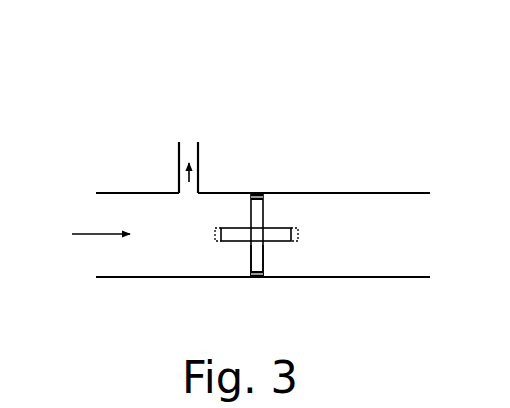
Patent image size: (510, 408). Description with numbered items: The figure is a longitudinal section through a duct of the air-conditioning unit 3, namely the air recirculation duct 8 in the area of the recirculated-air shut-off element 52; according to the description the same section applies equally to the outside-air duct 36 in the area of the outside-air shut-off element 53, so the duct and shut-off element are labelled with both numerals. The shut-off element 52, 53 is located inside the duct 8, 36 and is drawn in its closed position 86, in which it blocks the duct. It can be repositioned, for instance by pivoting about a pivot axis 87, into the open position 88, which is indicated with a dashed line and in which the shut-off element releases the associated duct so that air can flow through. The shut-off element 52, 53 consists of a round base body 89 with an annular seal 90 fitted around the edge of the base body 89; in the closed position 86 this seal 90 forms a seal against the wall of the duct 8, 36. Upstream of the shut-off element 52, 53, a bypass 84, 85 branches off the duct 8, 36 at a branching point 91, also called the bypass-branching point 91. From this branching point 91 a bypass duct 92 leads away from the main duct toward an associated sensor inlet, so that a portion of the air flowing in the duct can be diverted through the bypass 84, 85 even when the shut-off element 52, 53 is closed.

The air-conditioning unit 3 is at (182, 92).
The air recirculation duct 8 is at (251, 185).
The outside-air duct 36 is at (379, 185).
The bypass 84 is at (154, 177).
The bypass 85 is at (163, 151).
The bypass duct 92 is at (198, 142).
The branching point 91 is at (190, 200).
The recirculated-air shut-off element 52 is at (289, 232).
The outside-air shut-off element 53 is at (277, 262).
The pivot axis 87 is at (258, 235).
The base body 89 is at (259, 262).
The seal 90 is at (258, 193).
The open position 88 is at (233, 216).
The closed position 86 is at (229, 267).